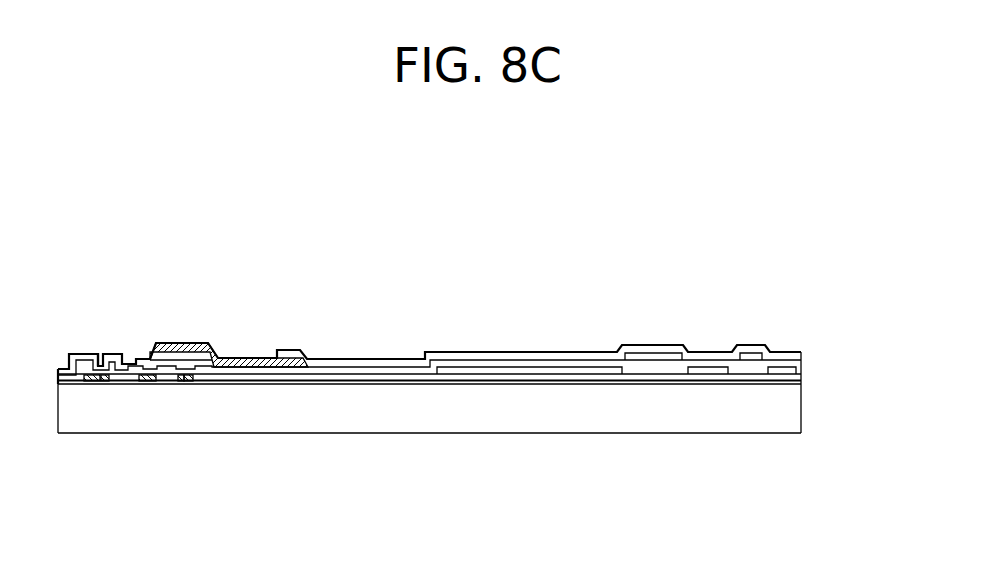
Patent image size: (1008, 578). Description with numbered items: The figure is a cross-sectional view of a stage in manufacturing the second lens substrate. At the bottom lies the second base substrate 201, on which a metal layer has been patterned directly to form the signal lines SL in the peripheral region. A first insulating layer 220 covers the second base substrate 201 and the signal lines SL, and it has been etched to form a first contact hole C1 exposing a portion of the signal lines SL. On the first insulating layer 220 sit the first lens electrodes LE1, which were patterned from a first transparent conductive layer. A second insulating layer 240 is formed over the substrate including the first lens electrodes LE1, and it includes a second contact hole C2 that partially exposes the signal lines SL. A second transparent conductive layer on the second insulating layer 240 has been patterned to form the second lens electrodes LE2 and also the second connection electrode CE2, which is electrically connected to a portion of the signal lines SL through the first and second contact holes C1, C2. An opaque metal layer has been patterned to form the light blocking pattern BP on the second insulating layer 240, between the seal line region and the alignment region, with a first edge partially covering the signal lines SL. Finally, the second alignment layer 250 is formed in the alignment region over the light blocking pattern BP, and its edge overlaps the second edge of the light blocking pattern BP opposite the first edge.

The second base substrate 201 is at (802, 421).
The first insulating layer 220 is at (802, 380).
The second insulating layer 240 is at (802, 369).
The second alignment layer 250 is at (802, 354).
The second connection electrode CE2 is at (84, 355).
The light blocking pattern BP is at (277, 368).
The first contact hole C1 is at (183, 378).
The second contact hole C2 is at (84, 376).
The signal lines SL is at (178, 379).
The first lens electrodes LE1 is at (544, 371).
The second lens electrodes LE2 is at (668, 359).